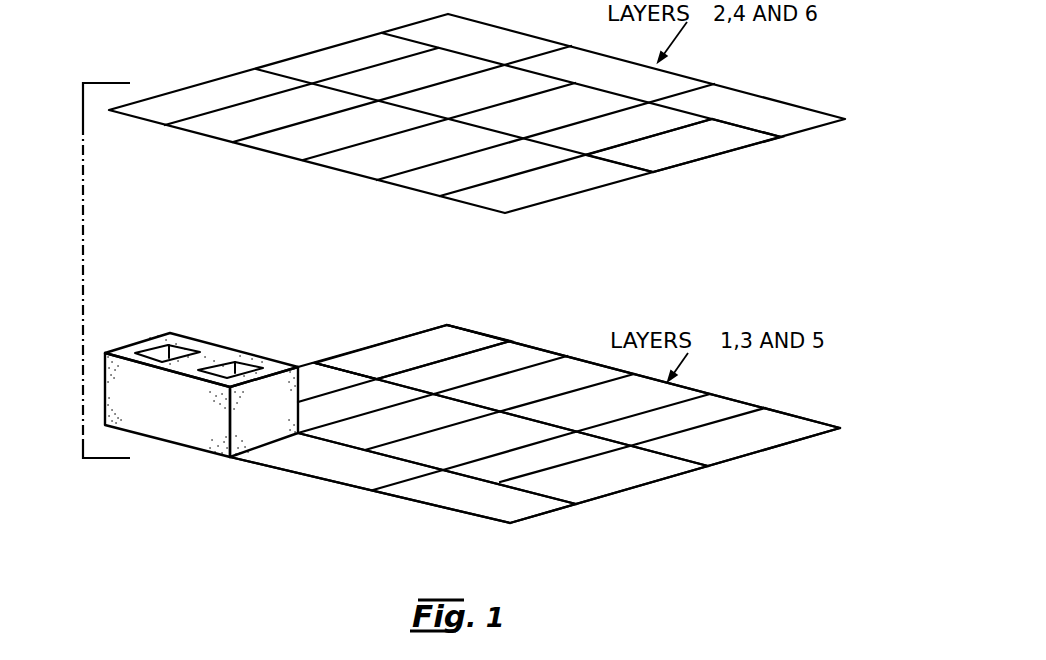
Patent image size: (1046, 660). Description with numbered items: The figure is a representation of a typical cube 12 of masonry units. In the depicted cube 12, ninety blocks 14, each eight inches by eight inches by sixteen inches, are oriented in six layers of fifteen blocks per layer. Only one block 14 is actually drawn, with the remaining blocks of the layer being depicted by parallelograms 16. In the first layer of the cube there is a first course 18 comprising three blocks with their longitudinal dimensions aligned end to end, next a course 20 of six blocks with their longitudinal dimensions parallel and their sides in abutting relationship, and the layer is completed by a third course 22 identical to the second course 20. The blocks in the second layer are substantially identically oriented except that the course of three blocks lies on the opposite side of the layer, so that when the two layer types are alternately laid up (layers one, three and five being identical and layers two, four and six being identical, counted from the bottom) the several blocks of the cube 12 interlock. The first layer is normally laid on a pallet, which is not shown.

The cube 12 is at (83, 248).
The blocks 14 is at (223, 353).
The parallelograms 16 is at (728, 142).
The first course 18 is at (557, 521).
The course 20 is at (678, 485).
The third course 22 is at (774, 457).